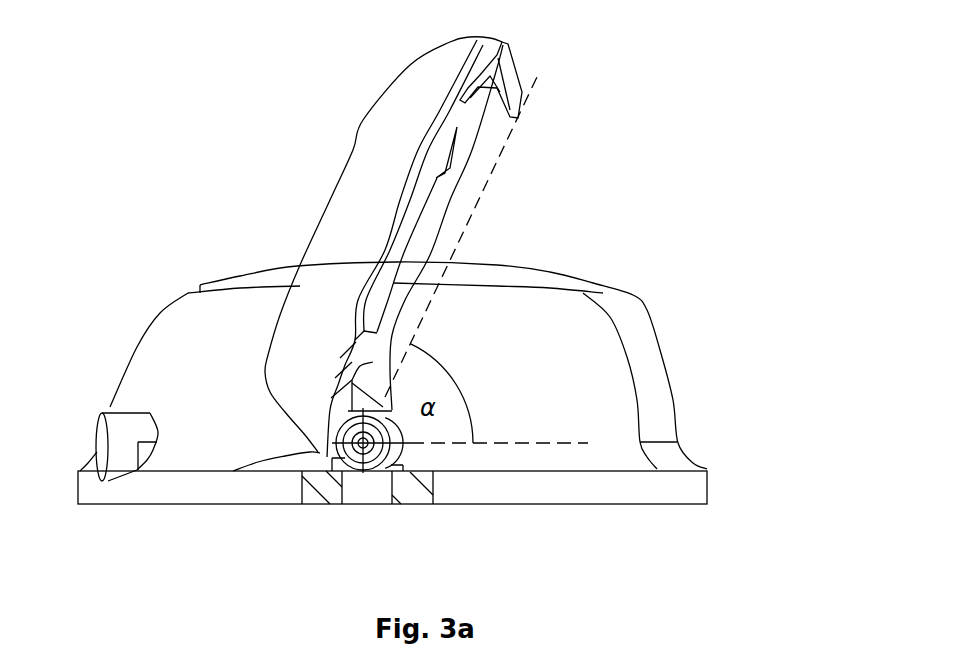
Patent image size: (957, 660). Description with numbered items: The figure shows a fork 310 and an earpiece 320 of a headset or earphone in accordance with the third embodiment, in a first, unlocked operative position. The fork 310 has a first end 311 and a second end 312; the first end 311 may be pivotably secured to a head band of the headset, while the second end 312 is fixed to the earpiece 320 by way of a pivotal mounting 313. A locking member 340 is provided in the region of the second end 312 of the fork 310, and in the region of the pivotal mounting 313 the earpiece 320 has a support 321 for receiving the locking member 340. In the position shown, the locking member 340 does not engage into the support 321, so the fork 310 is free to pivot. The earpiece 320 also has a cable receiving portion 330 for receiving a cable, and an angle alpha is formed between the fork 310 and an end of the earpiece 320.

The fork 310 is at (355, 182).
The first end of the fork 311 is at (506, 43).
The second end of the fork 312 is at (233, 471).
The pivotal mounting 313 is at (382, 468).
The earpiece 320 is at (510, 305).
The support 321 is at (352, 493).
The cable receiving portion 330 is at (123, 423).
The locking member 340 is at (397, 453).